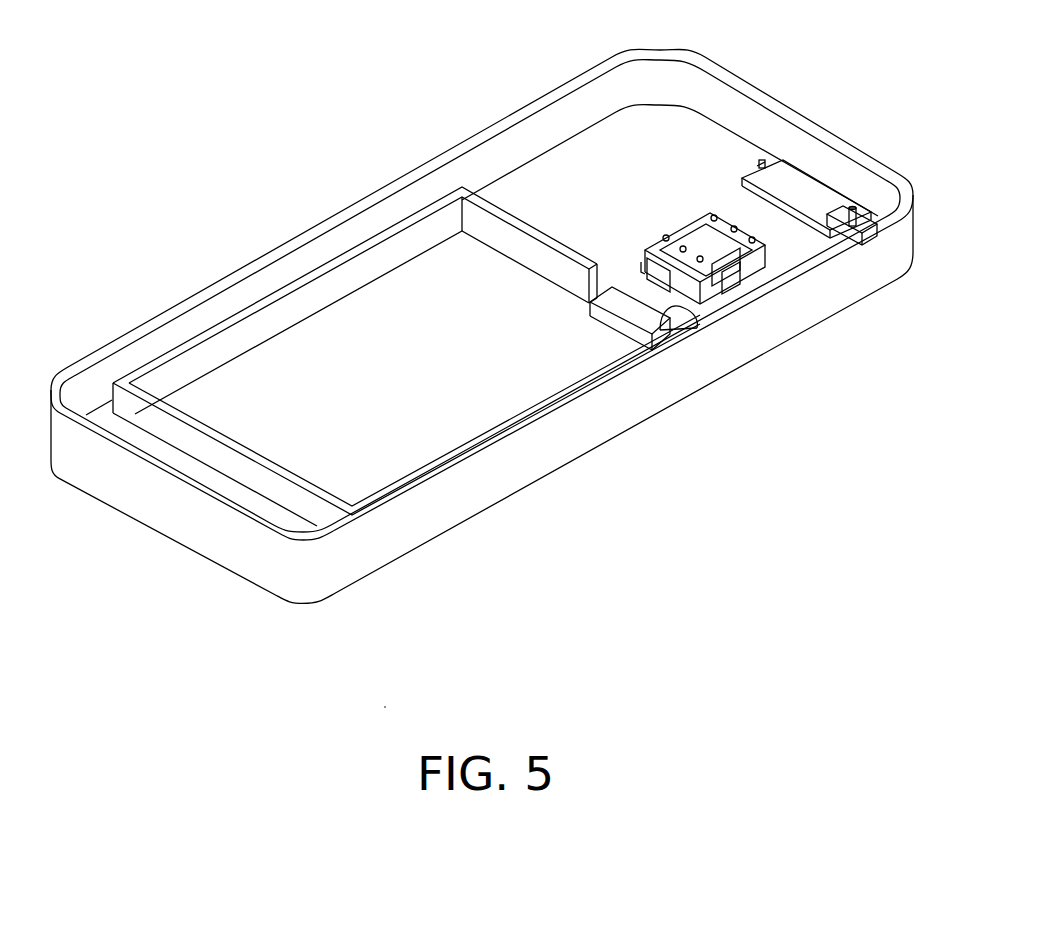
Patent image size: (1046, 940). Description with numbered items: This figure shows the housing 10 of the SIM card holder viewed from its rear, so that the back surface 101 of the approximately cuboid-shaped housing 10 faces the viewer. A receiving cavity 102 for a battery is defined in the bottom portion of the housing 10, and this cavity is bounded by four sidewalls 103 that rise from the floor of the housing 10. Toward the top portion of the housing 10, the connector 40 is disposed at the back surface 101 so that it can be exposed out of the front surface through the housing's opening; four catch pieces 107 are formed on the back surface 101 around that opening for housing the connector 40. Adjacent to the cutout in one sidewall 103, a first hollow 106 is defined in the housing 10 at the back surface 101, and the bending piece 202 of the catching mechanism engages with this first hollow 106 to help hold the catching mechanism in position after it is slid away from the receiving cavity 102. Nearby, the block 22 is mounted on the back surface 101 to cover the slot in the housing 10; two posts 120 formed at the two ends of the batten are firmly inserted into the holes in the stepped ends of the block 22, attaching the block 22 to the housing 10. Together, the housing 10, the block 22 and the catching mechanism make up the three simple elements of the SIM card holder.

The housing 10 is at (637, 80).
The back surface 101 is at (700, 128).
The receiving cavity 102 is at (443, 430).
The sidewalls 103 is at (337, 282).
The block 22 is at (787, 177).
The posts 120 is at (850, 205).
The connector 40 is at (738, 287).
The first hollow 106 is at (690, 320).
The catch pieces 107 is at (740, 280).
The bending piece 202 is at (605, 319).